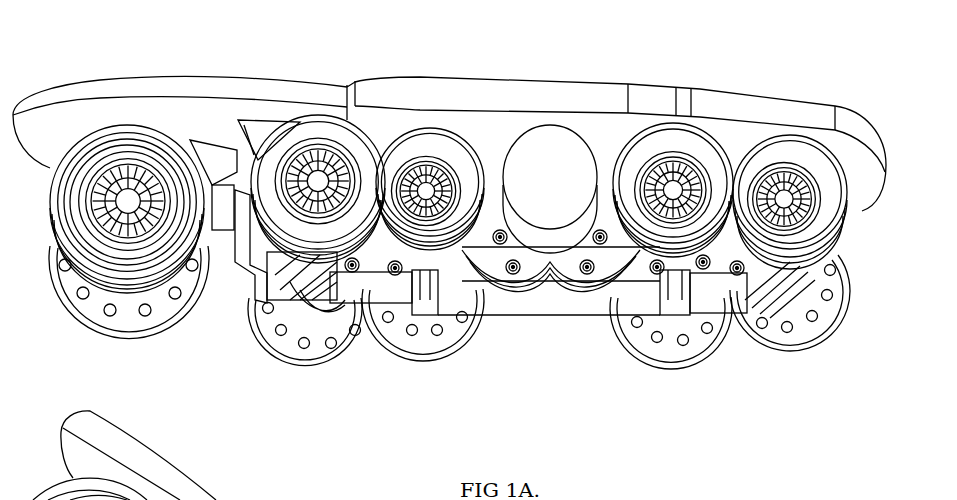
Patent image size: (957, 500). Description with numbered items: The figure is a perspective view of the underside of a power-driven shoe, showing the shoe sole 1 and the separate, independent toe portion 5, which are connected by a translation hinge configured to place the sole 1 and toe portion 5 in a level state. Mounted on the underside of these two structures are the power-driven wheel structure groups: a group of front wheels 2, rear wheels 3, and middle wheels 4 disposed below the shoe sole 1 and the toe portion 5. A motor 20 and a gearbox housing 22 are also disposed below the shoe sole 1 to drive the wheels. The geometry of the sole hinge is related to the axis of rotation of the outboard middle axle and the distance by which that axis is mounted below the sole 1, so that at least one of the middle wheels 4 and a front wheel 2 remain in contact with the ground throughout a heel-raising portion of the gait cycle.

The sole 1 is at (449, 234).
The front wheel 2 is at (77, 318).
The rear wheels 3 is at (603, 368).
The middle wheels 4 is at (245, 368).
The toe portion 5 is at (103, 77).
The motor 20 is at (548, 157).
The gearbox housing 22 is at (532, 315).